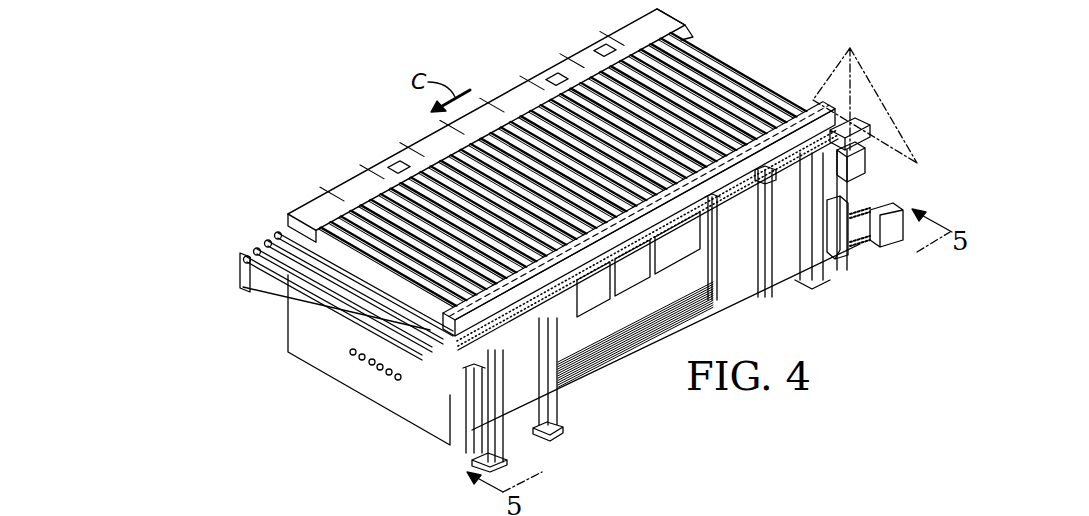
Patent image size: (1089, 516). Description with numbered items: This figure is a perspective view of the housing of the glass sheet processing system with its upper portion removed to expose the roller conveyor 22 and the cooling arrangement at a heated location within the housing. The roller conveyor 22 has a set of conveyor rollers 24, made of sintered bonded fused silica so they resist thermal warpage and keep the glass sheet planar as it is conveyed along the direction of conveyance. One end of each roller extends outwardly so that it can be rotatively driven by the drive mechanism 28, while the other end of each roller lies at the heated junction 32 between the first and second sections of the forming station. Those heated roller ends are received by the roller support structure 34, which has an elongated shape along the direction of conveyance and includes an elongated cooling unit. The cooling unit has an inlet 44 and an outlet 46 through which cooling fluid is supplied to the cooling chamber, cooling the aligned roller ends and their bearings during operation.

The roller conveyor 22 is at (768, 62).
The conveyor rollers 24 is at (726, 76).
The drive mechanism 28 is at (312, 206).
The junction 32 is at (855, 130).
The roller support structure 34 is at (716, 261).
The inlet 44 is at (770, 175).
The outlet 46 is at (513, 300).